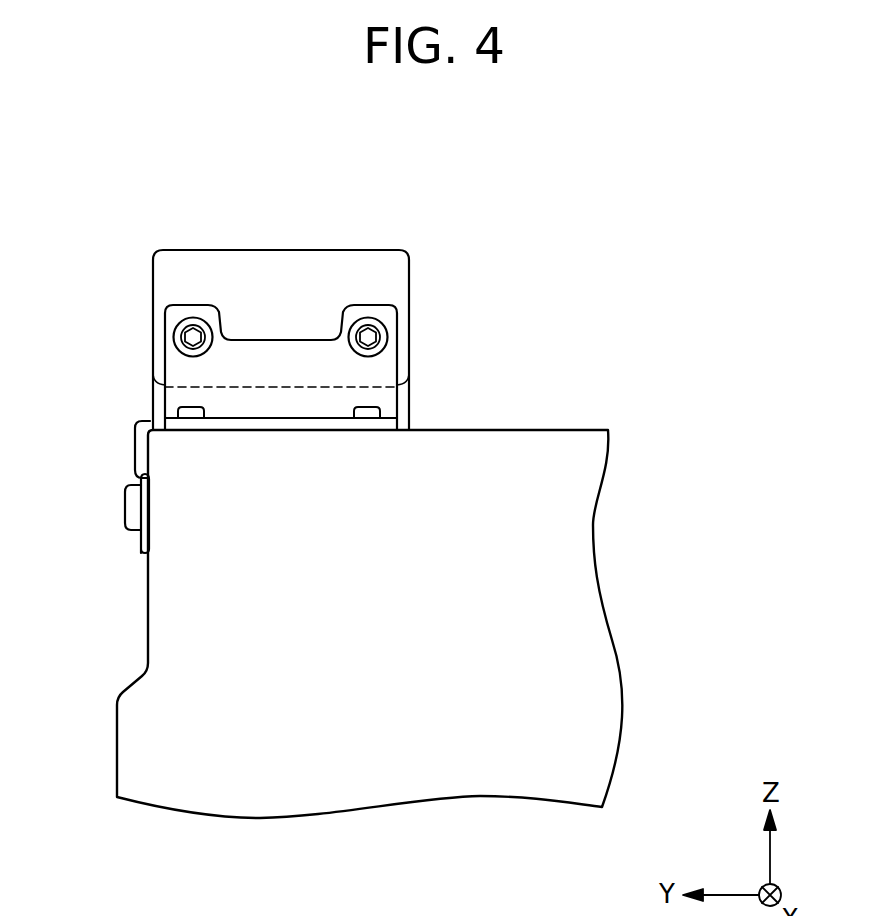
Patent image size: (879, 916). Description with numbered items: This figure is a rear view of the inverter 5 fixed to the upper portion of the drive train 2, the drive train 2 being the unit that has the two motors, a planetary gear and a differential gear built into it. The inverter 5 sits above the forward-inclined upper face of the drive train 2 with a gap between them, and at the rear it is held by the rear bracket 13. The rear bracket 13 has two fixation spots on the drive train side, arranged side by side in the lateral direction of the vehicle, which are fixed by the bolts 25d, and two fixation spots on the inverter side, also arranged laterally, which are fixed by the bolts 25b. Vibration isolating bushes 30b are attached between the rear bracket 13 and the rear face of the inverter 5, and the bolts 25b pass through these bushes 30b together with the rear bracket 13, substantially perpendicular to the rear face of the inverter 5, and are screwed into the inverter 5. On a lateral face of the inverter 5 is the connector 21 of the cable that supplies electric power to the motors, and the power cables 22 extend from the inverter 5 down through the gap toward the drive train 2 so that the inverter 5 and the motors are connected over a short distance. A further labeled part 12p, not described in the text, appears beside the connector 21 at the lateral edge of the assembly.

The drive train 2 is at (592, 672).
The inverter 5 is at (372, 260).
The rear bracket 13 is at (386, 368).
The bolts 25b is at (361, 330).
The vibration isolating bushes 30b is at (349, 346).
The bolts 25d is at (180, 413).
The connector 21 is at (137, 439).
The power cables 22 is at (131, 538).
The protrusion 12p is at (127, 500).